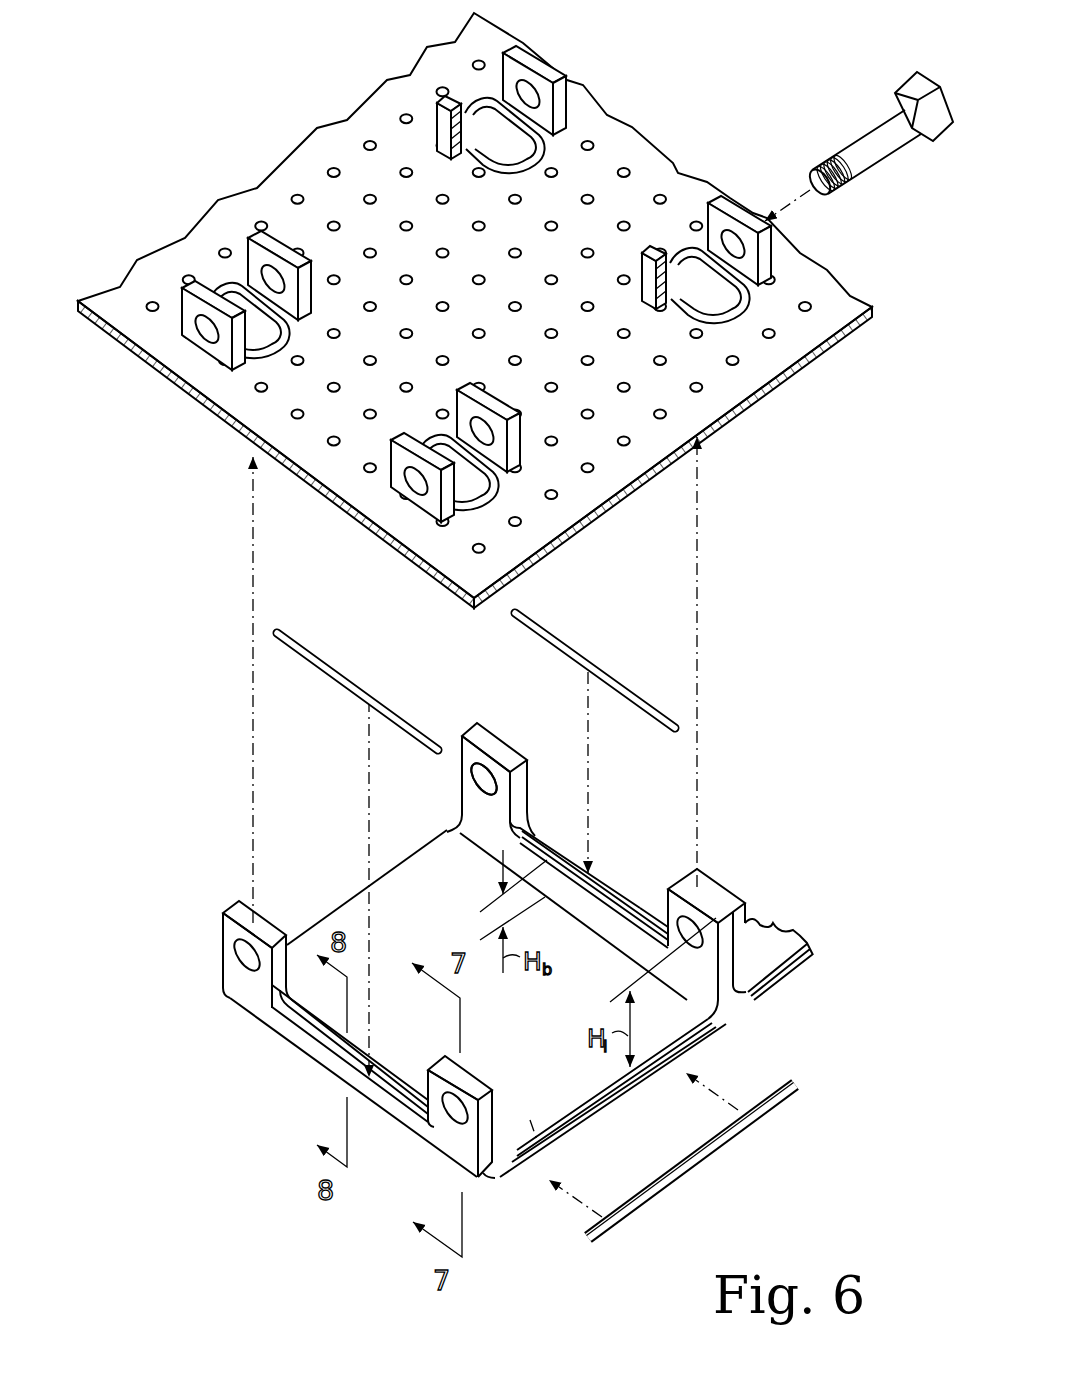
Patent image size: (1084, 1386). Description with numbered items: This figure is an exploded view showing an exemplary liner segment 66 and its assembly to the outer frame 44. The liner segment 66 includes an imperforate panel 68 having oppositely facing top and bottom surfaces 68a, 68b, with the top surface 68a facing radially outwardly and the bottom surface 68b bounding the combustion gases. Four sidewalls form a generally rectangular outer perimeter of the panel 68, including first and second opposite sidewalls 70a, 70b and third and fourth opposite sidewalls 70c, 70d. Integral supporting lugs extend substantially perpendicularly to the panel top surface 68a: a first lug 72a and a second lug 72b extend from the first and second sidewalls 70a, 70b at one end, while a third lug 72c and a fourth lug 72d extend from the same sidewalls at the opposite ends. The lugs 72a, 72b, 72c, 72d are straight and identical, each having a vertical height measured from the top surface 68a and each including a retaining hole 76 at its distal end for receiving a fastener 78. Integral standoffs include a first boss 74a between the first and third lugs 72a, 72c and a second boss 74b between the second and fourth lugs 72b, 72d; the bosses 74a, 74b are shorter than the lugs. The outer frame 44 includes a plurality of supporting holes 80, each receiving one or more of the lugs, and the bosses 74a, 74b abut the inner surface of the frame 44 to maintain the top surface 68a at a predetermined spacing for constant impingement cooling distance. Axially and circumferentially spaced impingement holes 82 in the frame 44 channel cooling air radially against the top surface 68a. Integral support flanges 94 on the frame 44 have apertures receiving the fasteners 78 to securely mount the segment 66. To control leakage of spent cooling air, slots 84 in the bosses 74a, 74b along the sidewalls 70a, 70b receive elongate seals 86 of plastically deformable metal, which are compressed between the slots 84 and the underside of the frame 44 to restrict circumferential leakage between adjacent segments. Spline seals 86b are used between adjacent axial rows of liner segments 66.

The outer frame 44 is at (475, 310).
The impingement holes 82 is at (590, 136).
The supporting holes 80 is at (798, 352).
The support flanges 94 is at (535, 68).
The fastener 78 is at (887, 157).
The elongate seal 86 is at (343, 688).
The spline seals 86b is at (800, 1083).
The liner segment 66 is at (479, 937).
The imperforate panel 68 is at (458, 982).
The top surface 68a is at (555, 1107).
The bottom surface 68b is at (540, 1153).
The first sidewall 70a is at (310, 1053).
The second sidewall 70b is at (613, 886).
The third sidewall 70c is at (328, 910).
The fourth sidewall 70d is at (625, 1090).
The first lug 72a is at (222, 948).
The second lug 72b is at (493, 747).
The third lug 72c is at (497, 1100).
The fourth lug 72d is at (707, 1022).
The first boss 74a is at (290, 1027).
The second boss 74b is at (555, 812).
The retaining hole 76 is at (470, 776).
The slot 84 is at (642, 903).